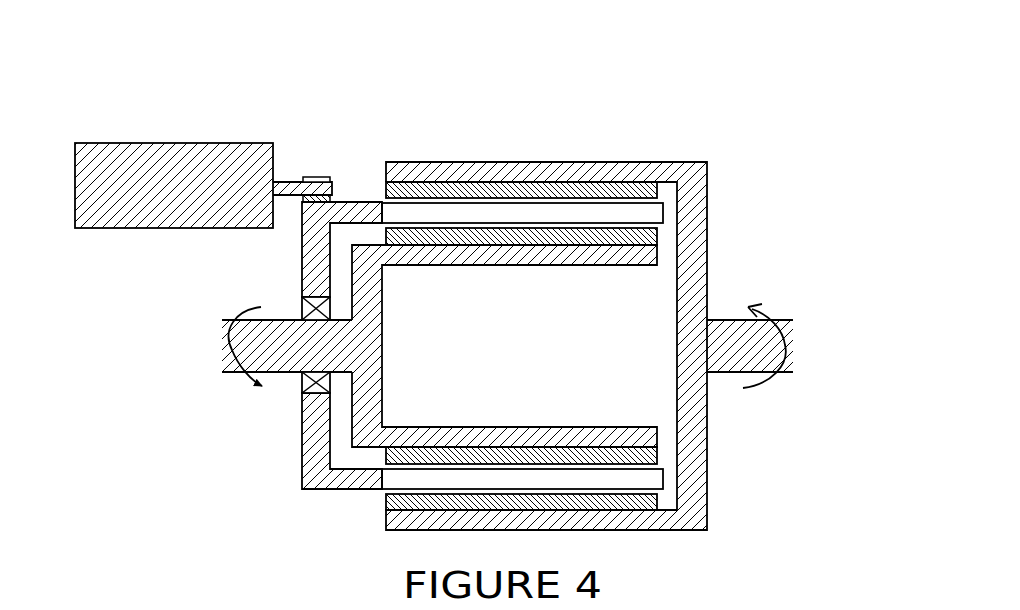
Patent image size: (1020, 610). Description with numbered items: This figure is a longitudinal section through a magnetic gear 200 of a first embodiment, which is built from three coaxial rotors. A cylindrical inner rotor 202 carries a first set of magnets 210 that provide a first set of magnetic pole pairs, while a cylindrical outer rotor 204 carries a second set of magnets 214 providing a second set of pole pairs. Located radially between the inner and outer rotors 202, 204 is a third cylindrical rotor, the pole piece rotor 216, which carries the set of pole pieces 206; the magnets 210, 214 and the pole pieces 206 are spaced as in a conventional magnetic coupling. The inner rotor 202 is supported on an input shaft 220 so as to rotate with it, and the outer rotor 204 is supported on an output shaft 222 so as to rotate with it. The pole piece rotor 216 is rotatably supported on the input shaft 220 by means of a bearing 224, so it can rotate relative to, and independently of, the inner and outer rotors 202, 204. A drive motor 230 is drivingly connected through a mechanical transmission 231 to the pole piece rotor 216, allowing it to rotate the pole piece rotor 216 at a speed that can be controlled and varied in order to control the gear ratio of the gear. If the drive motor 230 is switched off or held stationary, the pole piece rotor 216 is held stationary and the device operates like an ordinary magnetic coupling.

The magnetic gear 200 is at (383, 104).
The inner rotor 202 is at (512, 258).
The outer rotor 204 is at (482, 165).
The pole pieces 206 is at (398, 478).
The first set of magnets 210 is at (622, 240).
The second set of magnets 214 is at (565, 190).
The pole piece rotor 216 is at (332, 480).
The input shaft 220 is at (280, 363).
The output shaft 222 is at (717, 324).
The bearing 224 is at (300, 310).
The drive motor 230 is at (218, 142).
The mechanical transmission 231 is at (314, 168).